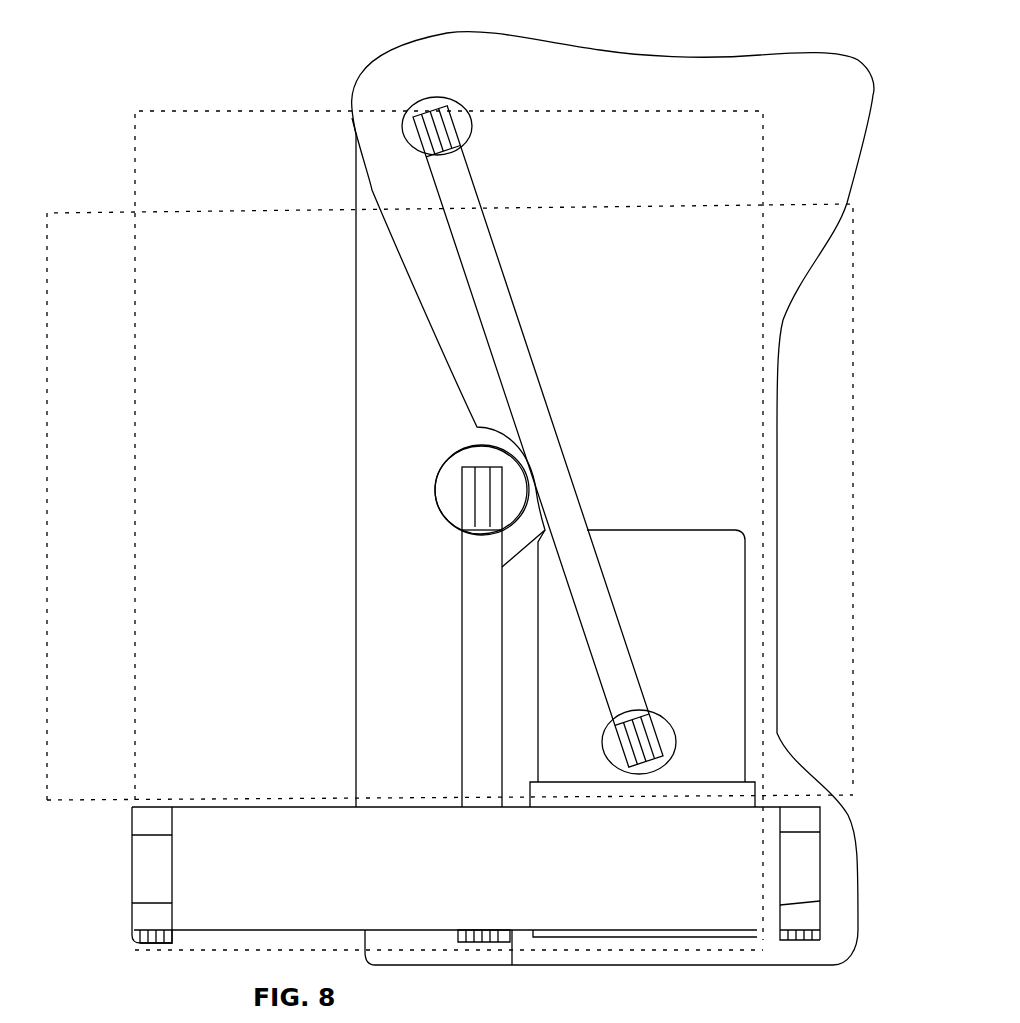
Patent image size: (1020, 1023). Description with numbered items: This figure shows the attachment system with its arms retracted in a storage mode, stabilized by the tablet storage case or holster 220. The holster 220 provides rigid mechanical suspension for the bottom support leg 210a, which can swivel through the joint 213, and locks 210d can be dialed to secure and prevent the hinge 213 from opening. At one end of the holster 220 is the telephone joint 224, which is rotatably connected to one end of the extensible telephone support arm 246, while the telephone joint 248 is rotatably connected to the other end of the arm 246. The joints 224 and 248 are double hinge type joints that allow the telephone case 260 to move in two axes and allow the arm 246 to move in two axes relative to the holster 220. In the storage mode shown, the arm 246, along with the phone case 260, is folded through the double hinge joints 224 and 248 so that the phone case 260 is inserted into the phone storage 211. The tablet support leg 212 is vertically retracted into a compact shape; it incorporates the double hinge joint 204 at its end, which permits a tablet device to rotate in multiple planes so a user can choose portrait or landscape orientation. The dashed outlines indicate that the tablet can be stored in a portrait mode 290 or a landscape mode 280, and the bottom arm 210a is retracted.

The holster 220 is at (822, 136).
The portrait mode 290 is at (132, 161).
The landscape mode 280 is at (96, 801).
The telephone joint 224 is at (444, 118).
The telephone support arm 246 is at (538, 436).
The telephone joint 248 is at (642, 730).
The double hinge joint 204 is at (465, 490).
The tablet support leg 212 is at (482, 668).
The telephone case 260 is at (666, 656).
The phone storage 211 is at (642, 785).
The support leg 210a is at (476, 886).
The joint 213 is at (476, 875).
The locks 210d is at (800, 940).